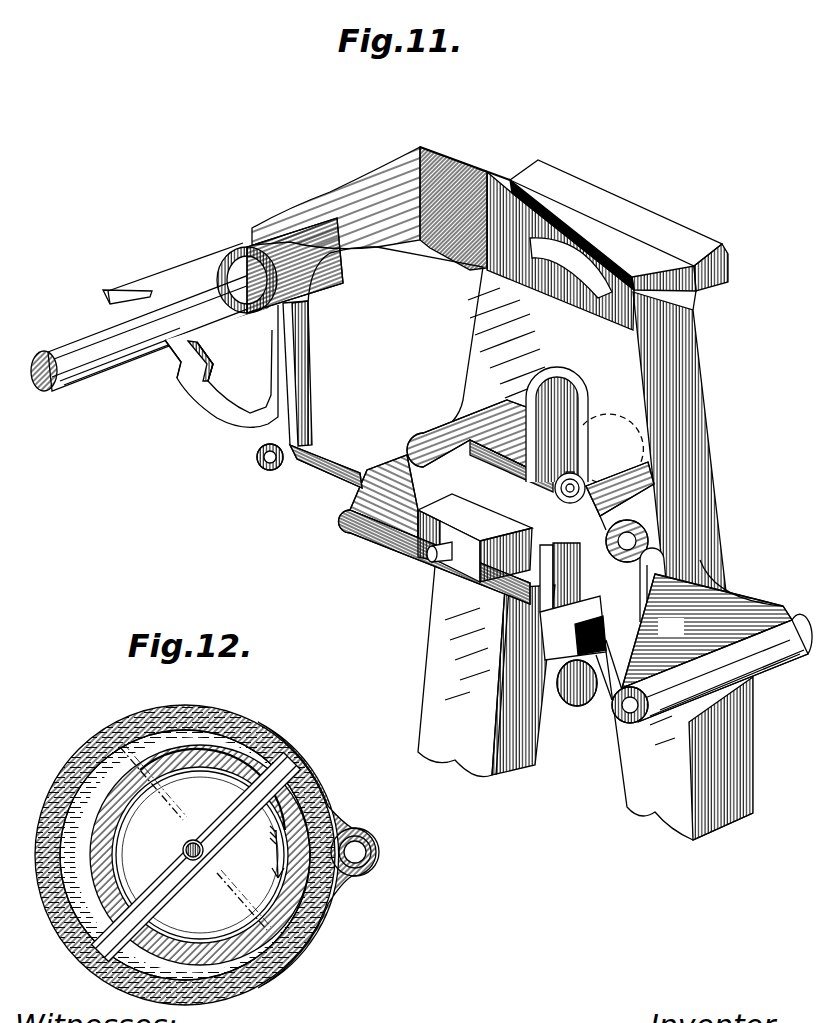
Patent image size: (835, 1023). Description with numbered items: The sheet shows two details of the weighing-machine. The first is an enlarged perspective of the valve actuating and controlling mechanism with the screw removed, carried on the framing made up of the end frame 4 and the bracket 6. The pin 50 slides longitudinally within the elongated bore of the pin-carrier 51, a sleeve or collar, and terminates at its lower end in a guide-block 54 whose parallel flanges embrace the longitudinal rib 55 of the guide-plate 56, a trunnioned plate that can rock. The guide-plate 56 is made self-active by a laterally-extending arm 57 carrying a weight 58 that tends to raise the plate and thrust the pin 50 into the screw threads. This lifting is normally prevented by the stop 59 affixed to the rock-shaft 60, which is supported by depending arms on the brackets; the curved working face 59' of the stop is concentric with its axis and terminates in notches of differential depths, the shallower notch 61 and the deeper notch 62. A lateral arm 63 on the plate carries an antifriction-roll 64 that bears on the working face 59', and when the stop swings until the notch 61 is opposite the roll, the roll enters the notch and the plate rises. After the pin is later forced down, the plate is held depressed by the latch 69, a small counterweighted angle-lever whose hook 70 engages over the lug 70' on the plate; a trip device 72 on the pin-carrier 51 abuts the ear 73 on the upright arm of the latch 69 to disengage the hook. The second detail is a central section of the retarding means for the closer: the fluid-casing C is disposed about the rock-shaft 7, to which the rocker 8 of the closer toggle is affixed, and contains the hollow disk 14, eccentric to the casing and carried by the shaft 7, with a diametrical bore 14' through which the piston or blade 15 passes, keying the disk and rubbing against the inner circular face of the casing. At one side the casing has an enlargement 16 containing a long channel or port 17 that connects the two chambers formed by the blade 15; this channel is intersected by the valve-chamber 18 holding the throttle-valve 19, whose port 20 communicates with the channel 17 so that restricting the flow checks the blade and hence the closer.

In FIG. 11, the end frame 4 is at (480, 335).
In FIG. 11, the bracket 6 is at (581, 190).
In FIG. 11, the rocker 8 is at (624, 539).
In FIG. 11, the pin 50 is at (586, 481).
In FIG. 11, the pin-carrier 51 is at (533, 520).
In FIG. 11, the guide-block 54 is at (540, 622).
In FIG. 11, the longitudinal rib 55 is at (350, 532).
In FIG. 11, the guide-plate 56 is at (423, 483).
In FIG. 11, the laterally-extending arm 57 is at (560, 445).
In FIG. 11, the weight 58 is at (602, 424).
In FIG. 11, the stop 59 is at (175, 272).
In FIG. 11, the working face 59' is at (220, 369).
In FIG. 11, the rock-shaft 60 is at (93, 366).
In FIG. 11, the notch 61 is at (173, 359).
In FIG. 11, the notch 62 is at (147, 293).
In FIG. 11, the lateral arm 63 is at (316, 470).
In FIG. 11, the antifriction-roll 64 is at (258, 462).
In FIG. 11, the latch 69 is at (613, 712).
In FIG. 11, the hook 70 is at (707, 624).
In FIG. 11, the lug 70' is at (574, 694).
In FIG. 11, the trip device 72 is at (609, 508).
In FIG. 11, the ear 73 is at (660, 565).
In FIG. 12, the fluid-casing C is at (185, 854).
In FIG. 12, the rock-shaft 7 is at (185, 851).
In FIG. 12, the hollow disk 14 is at (200, 824).
In FIG. 12, the bore 14' is at (213, 767).
In FIG. 12, the piston or blade 15 is at (112, 975).
In FIG. 12, the enlargement 16 is at (303, 940).
In FIG. 12, the channel or port 17 is at (323, 800).
In FIG. 12, the valve-chamber 18 is at (366, 867).
In FIG. 12, the throttle-valve 19 is at (366, 845).
In FIG. 12, the port 20 is at (341, 832).